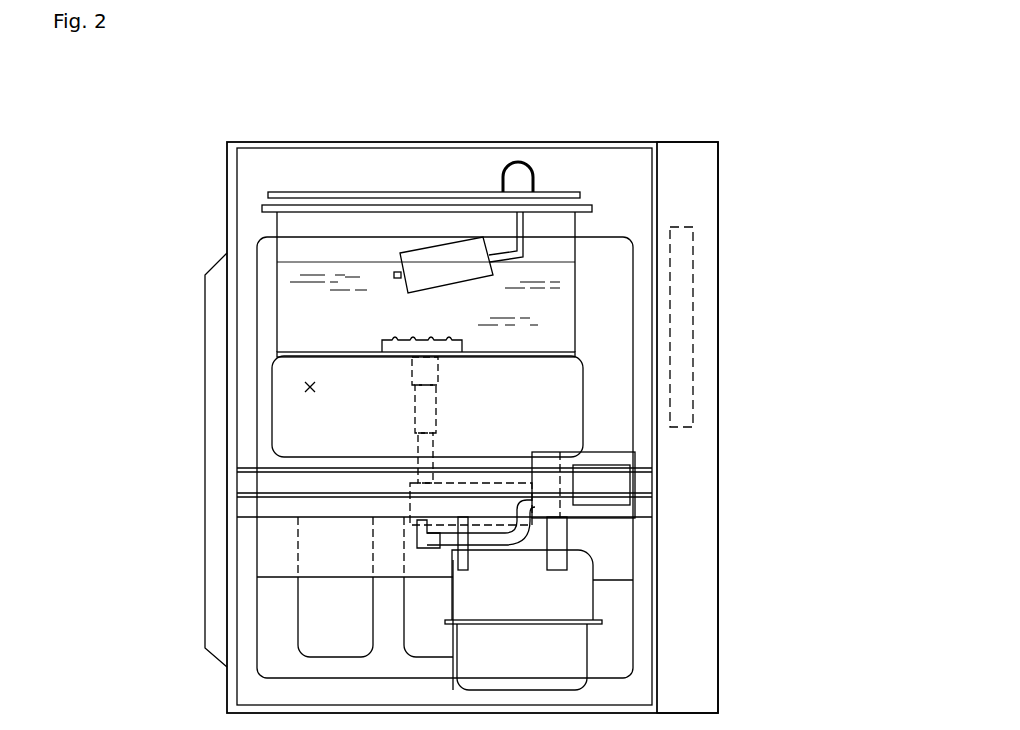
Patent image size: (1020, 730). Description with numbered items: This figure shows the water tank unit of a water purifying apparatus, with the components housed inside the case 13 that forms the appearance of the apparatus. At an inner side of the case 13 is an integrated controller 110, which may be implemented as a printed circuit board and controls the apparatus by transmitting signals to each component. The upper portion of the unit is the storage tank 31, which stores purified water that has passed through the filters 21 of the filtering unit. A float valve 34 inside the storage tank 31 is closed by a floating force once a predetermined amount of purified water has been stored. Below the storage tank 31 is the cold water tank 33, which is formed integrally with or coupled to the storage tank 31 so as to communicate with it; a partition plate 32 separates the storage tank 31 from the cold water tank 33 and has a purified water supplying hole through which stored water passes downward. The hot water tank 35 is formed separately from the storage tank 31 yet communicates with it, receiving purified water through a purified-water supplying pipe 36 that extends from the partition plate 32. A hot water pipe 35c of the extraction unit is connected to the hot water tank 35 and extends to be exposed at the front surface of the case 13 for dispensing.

The case 13 is at (710, 180).
The integrated controller 110 is at (690, 320).
The storage tank 31 is at (320, 240).
The float valve 34 is at (430, 258).
The partition plate 32 is at (303, 357).
The cold water tank 33 is at (305, 387).
The purified-water supplying pipe 36 is at (422, 418).
The hot water pipe 35c is at (587, 528).
The hot water tank 35 is at (573, 597).
The filter 21 is at (307, 620).